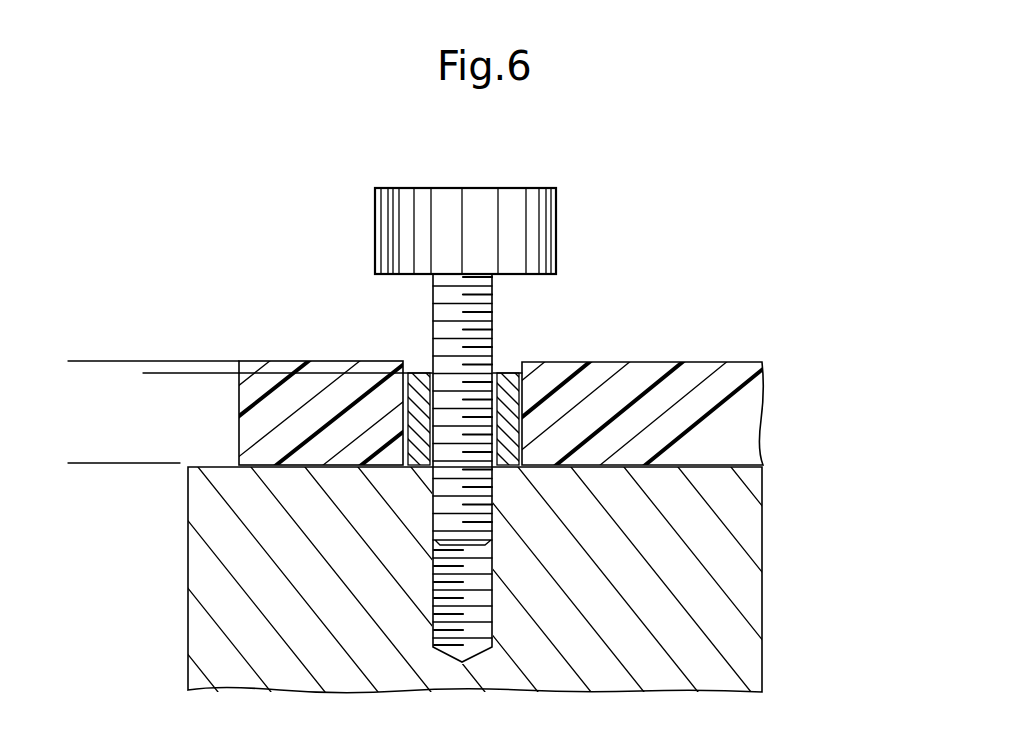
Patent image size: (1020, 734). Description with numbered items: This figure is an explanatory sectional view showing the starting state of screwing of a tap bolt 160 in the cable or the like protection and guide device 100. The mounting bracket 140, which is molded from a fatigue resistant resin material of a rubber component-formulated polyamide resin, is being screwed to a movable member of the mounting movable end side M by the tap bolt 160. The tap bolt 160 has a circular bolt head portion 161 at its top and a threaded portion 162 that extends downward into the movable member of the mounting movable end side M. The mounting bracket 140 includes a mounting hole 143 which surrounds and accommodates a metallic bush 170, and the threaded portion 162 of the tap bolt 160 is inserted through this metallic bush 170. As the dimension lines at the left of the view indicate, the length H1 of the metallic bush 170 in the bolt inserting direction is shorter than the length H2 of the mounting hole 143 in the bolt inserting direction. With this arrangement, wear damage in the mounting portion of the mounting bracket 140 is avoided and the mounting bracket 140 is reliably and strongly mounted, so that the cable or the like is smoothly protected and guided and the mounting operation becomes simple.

The cable or the like protection and guide device 100 is at (521, 395).
The mounting bracket 140 is at (775, 428).
The mounting hole 143 is at (417, 370).
The tap bolt 160 is at (539, 395).
The bolt head portion 161 is at (557, 235).
The threaded portion 162 is at (493, 515).
The metallic bush 170 is at (400, 418).
The mounting movable end side M is at (642, 590).
The length of the metallic bush H1 is at (155, 375).
The length of the mounting hole H2 is at (80, 363).